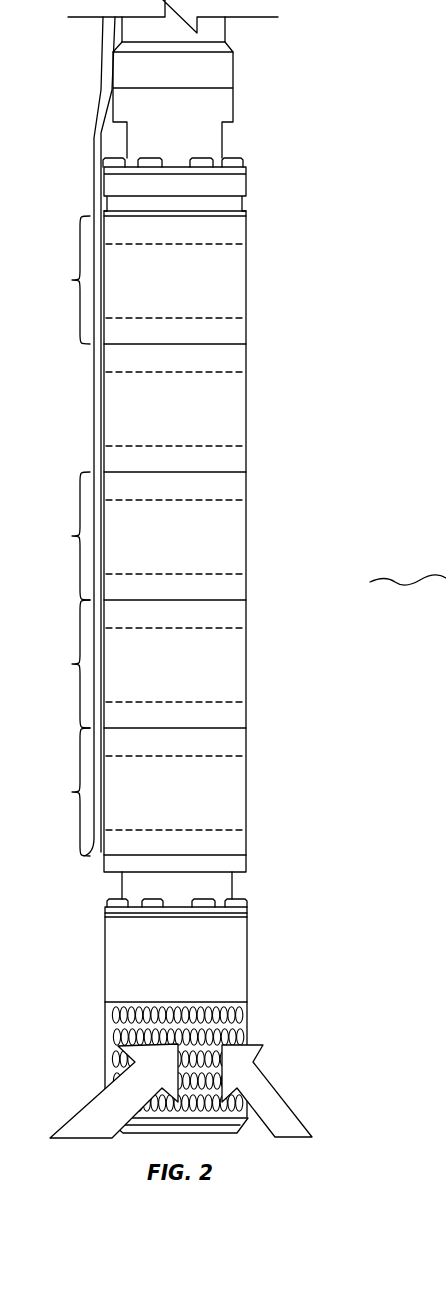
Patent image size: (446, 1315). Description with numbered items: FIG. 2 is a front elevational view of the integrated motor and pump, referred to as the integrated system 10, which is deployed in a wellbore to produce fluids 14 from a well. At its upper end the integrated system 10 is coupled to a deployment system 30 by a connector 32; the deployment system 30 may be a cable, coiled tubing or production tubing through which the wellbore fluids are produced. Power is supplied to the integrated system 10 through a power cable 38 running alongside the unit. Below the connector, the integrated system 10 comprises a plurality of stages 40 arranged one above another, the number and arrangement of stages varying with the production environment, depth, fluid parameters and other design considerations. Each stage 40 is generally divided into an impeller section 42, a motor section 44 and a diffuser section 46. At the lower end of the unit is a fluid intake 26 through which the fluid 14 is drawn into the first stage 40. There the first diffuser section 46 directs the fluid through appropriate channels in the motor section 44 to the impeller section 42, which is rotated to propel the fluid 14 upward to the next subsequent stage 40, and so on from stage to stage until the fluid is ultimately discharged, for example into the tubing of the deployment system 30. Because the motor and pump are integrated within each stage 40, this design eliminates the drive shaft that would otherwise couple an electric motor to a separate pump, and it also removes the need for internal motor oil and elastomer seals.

The integrated system 10 is at (312, 146).
The fluids 14 is at (282, 1093).
The fluid intake 26 is at (218, 990).
The deployment system 30 is at (225, 25).
The connector 32 is at (223, 110).
The power cable 38 is at (93, 408).
The stage 40 is at (63, 536).
The impeller section 42 is at (217, 233).
The motor section 44 is at (217, 278).
The diffuser section 46 is at (217, 331).